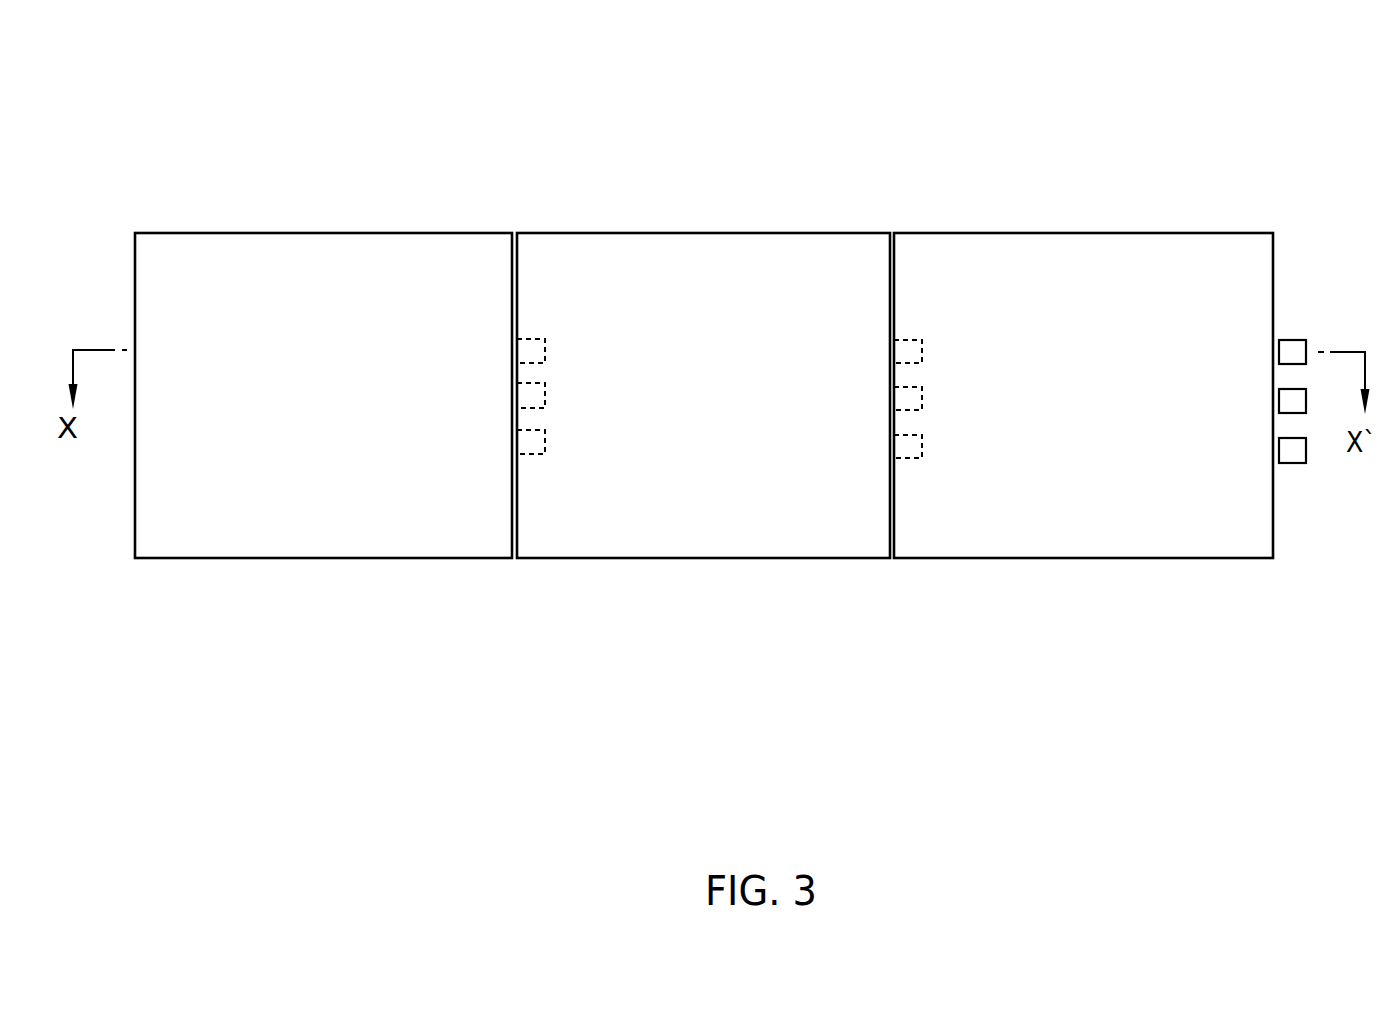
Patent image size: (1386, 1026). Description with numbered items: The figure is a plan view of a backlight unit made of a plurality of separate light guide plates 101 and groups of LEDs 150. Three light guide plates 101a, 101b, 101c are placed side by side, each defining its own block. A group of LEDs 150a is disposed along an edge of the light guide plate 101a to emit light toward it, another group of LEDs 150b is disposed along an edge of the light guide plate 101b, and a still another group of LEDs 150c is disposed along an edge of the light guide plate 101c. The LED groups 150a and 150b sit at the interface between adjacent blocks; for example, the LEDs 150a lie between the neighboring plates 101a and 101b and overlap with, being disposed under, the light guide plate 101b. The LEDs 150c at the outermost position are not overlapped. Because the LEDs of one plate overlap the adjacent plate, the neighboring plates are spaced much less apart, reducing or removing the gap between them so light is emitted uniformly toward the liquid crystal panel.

The light guide plates 101 is at (1092, 158).
The light guide plate 101a is at (381, 255).
The light guide plate 101b is at (723, 260).
The light guide plate 101c is at (1081, 270).
The groups of LEDs 150 is at (593, 623).
The group of LEDs 150a is at (545, 398).
The group of LEDs 150b is at (922, 400).
The group of LEDs 150c is at (1298, 403).